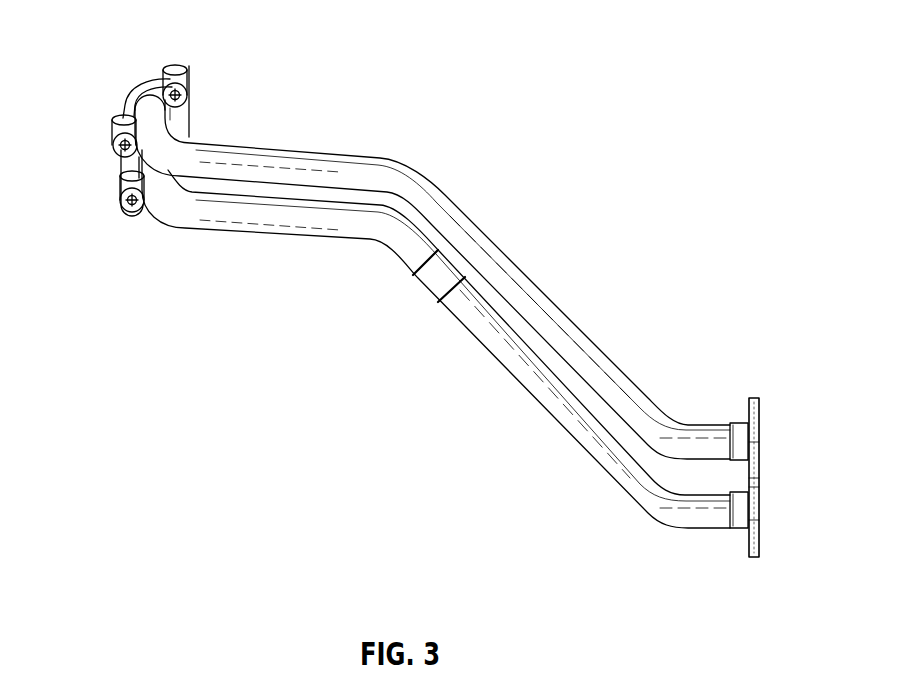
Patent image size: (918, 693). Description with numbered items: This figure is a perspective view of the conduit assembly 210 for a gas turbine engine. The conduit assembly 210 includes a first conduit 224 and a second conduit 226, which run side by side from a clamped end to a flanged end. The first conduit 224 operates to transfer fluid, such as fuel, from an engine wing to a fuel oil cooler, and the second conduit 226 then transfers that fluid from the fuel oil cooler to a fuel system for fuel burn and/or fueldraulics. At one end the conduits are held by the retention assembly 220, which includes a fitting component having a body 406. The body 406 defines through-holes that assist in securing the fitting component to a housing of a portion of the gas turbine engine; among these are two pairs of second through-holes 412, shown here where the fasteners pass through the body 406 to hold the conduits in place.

The conduit assembly 210 is at (447, 163).
The retention assembly 220 is at (178, 63).
The first conduit 224 is at (522, 270).
The second conduit 226 is at (540, 407).
The body 406 is at (158, 80).
The second through-holes 412 is at (186, 92).